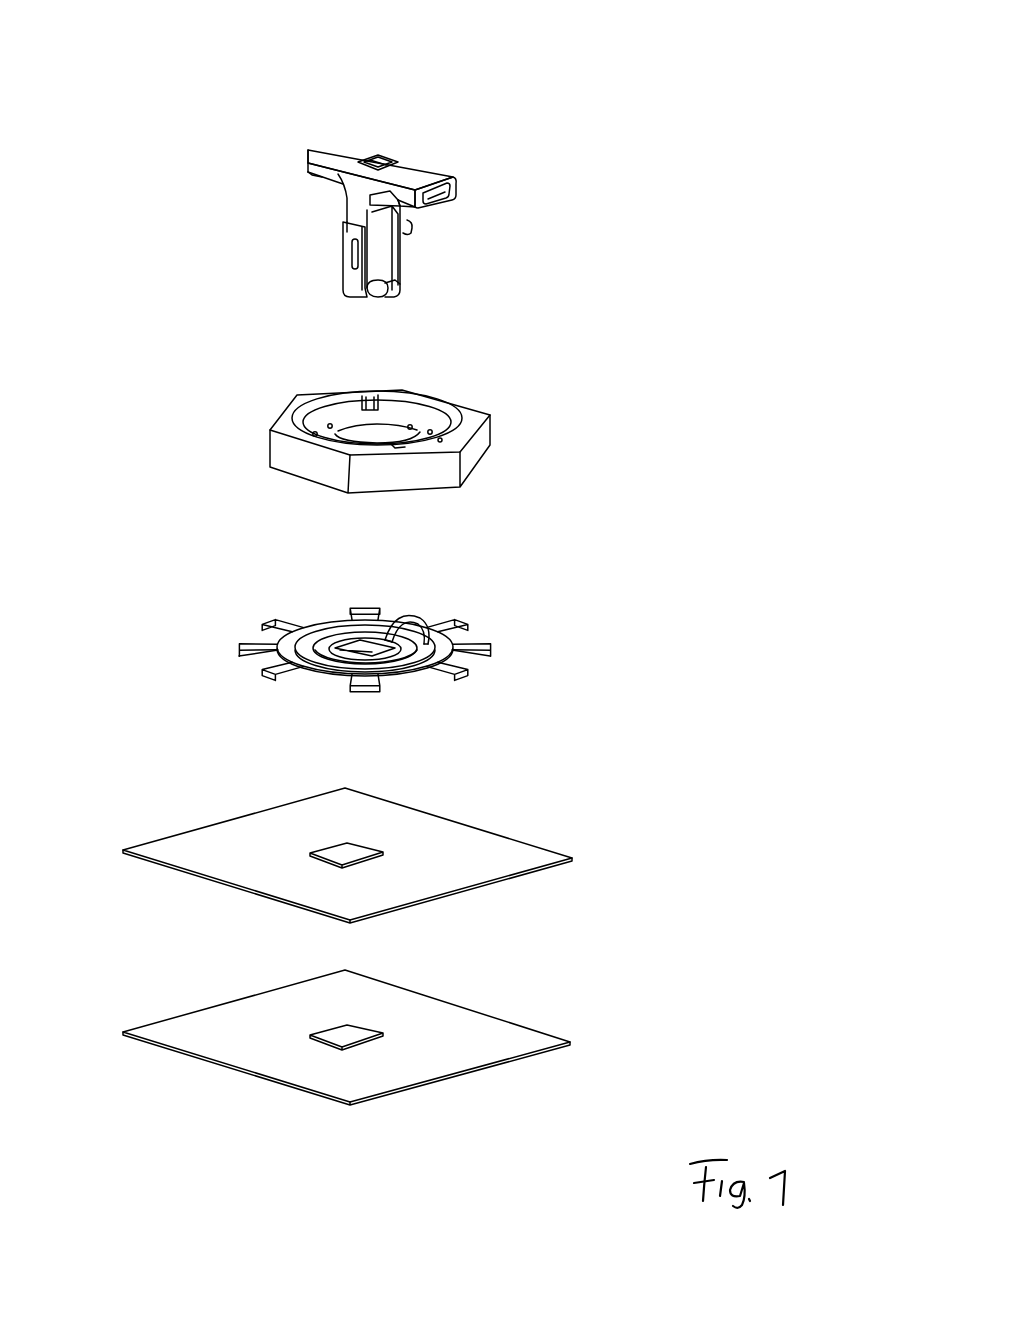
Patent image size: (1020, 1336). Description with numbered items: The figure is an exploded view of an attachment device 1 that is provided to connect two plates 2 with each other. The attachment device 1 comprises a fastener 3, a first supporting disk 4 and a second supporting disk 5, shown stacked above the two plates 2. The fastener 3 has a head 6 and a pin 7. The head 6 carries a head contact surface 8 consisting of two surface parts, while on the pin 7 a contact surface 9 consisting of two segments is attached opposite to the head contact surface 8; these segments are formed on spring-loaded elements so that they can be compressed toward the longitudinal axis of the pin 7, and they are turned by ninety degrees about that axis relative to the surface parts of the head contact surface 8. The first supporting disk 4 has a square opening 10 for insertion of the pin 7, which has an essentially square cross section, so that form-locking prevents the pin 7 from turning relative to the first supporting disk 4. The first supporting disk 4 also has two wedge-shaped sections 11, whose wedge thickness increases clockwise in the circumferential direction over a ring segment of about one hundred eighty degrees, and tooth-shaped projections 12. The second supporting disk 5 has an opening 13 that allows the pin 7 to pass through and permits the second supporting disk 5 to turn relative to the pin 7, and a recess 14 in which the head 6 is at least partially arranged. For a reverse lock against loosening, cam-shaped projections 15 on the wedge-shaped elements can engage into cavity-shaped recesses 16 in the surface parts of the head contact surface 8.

The attachment device 1 is at (668, 243).
The plates 2 is at (128, 1002).
The fastener 3 is at (486, 189).
The first supporting disk 4 is at (208, 612).
The second supporting disk 5 is at (250, 405).
The head 6 is at (330, 147).
The pin 7 is at (323, 252).
The head contact surface 8 is at (308, 181).
The contact surface 9 is at (341, 223).
The opening 10 is at (363, 644).
The wedge-shaped sections 11 is at (428, 644).
The tooth-shaped projections 12 is at (416, 700).
The opening 13 is at (366, 434).
The recess 14 is at (420, 404).
The projections 15 is at (433, 187).
The recesses 16 is at (437, 428).